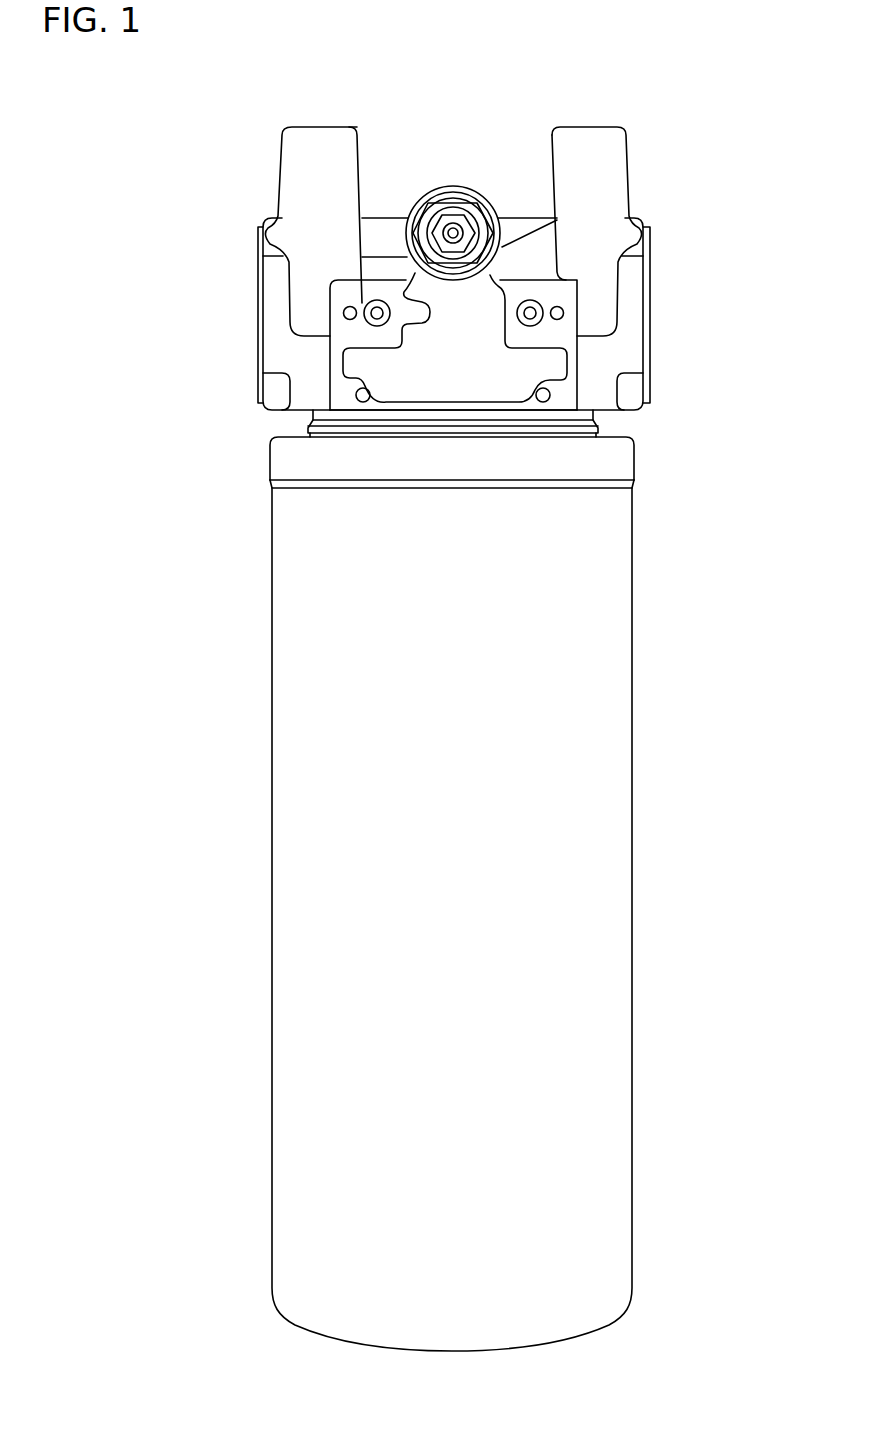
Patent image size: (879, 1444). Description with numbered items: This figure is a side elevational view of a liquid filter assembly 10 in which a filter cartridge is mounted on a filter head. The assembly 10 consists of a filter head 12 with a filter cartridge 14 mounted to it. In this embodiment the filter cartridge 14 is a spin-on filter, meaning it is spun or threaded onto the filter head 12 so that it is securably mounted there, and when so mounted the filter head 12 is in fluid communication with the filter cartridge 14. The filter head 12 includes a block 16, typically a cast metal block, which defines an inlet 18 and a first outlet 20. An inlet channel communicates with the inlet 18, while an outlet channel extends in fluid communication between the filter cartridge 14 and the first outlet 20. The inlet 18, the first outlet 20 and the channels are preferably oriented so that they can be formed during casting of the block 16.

The liquid filter assembly 10 is at (212, 190).
The filter head 12 is at (233, 251).
The filter cartridge 14 is at (233, 520).
The block 16 is at (383, 217).
The inlet 18 is at (650, 246).
The first outlet 20 is at (258, 381).